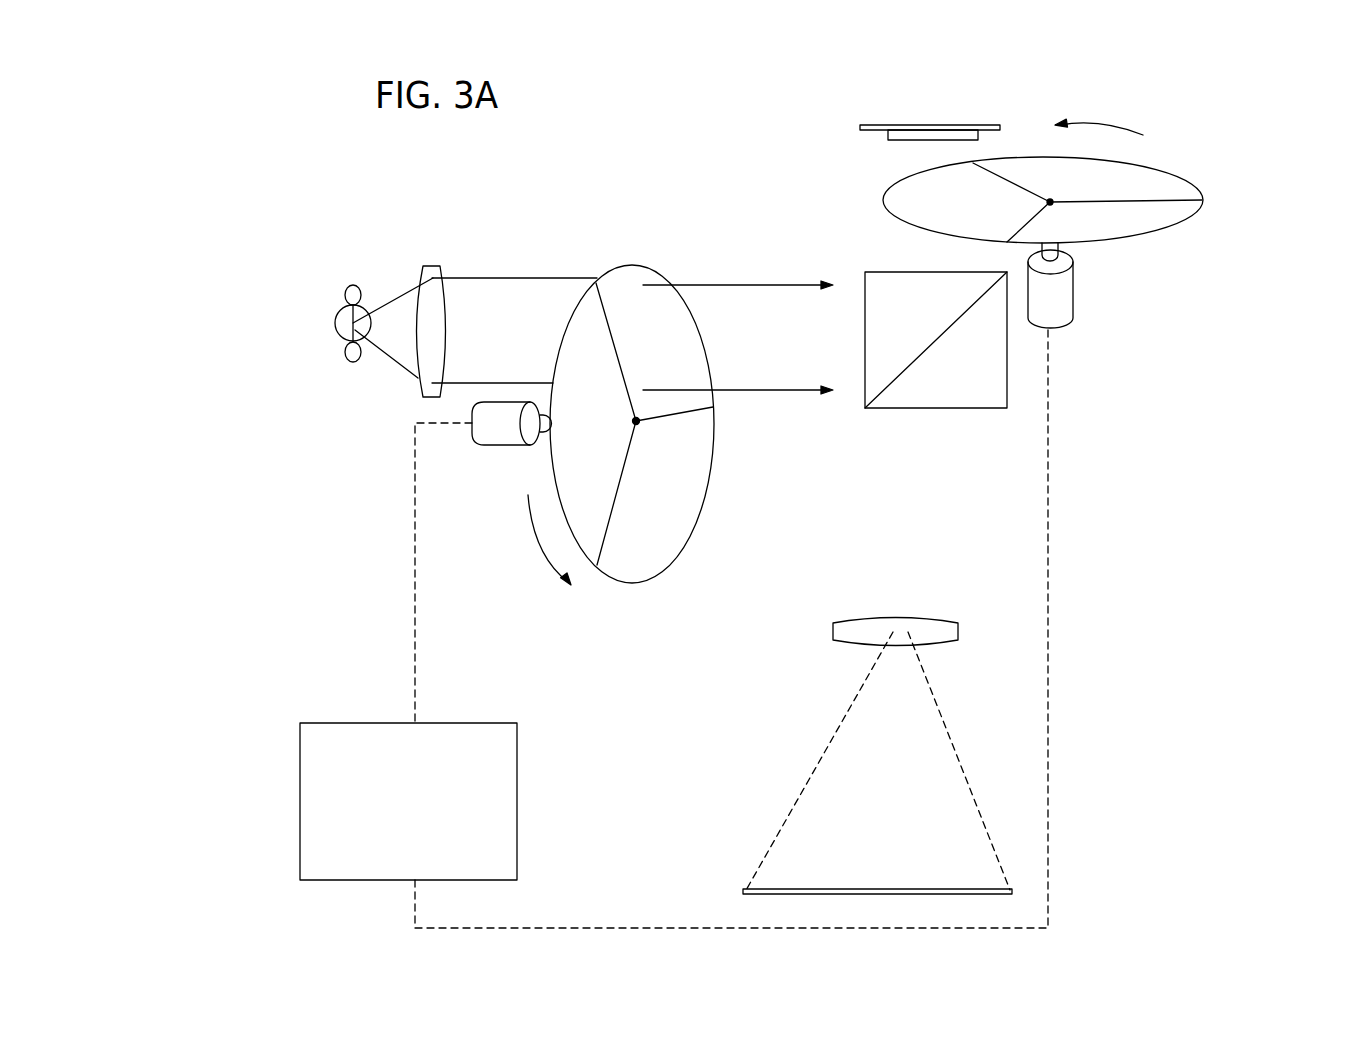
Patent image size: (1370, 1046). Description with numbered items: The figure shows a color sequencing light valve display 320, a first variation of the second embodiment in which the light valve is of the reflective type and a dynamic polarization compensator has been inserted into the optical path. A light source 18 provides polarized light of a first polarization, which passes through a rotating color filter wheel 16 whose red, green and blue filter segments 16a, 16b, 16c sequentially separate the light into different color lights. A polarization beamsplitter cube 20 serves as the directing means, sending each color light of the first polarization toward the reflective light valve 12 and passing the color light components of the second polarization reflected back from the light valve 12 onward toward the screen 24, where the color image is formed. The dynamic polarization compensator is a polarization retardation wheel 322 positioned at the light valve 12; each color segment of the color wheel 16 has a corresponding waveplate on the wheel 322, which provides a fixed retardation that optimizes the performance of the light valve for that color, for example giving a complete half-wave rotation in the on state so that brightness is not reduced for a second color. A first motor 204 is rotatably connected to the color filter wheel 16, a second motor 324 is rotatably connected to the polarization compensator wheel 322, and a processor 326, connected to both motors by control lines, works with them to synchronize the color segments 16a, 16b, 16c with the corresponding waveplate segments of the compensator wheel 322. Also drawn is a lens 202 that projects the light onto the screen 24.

The light valve 12 is at (962, 125).
The color filter wheel 16 is at (629, 413).
The red segment 16a is at (633, 275).
The green segment 16b is at (693, 475).
The blue segment 16c is at (587, 322).
The light source 18 is at (352, 322).
The polarization beamsplitter cube 20 is at (953, 408).
The screen 24 is at (752, 892).
The projection lens 202 is at (843, 643).
The first motor 204 is at (500, 452).
The color sequencing light valve display 320 is at (1099, 195).
The polarization retardation wheel 322 is at (1160, 230).
The second motor 324 is at (1068, 292).
The processor 326 is at (322, 723).